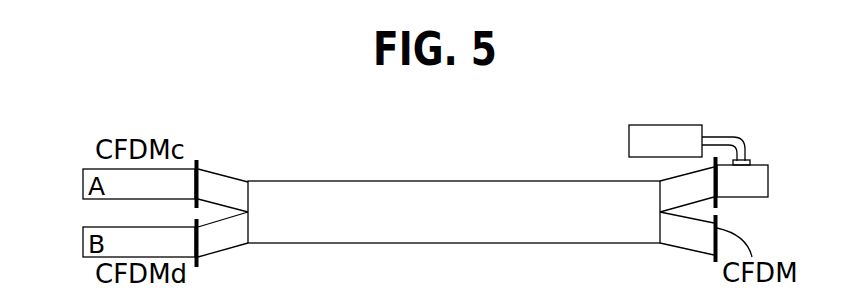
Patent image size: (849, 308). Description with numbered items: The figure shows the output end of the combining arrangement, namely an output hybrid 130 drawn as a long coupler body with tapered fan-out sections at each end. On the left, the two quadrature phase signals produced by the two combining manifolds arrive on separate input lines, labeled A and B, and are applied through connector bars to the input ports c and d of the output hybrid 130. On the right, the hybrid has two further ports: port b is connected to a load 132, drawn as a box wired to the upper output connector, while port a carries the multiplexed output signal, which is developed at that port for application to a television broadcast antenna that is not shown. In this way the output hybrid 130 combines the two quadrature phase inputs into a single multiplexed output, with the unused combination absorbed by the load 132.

The output hybrid 130 is at (407, 181).
The load 132 is at (658, 125).
The port a is at (682, 247).
The port b is at (678, 177).
The port c is at (227, 175).
The port d is at (227, 251).